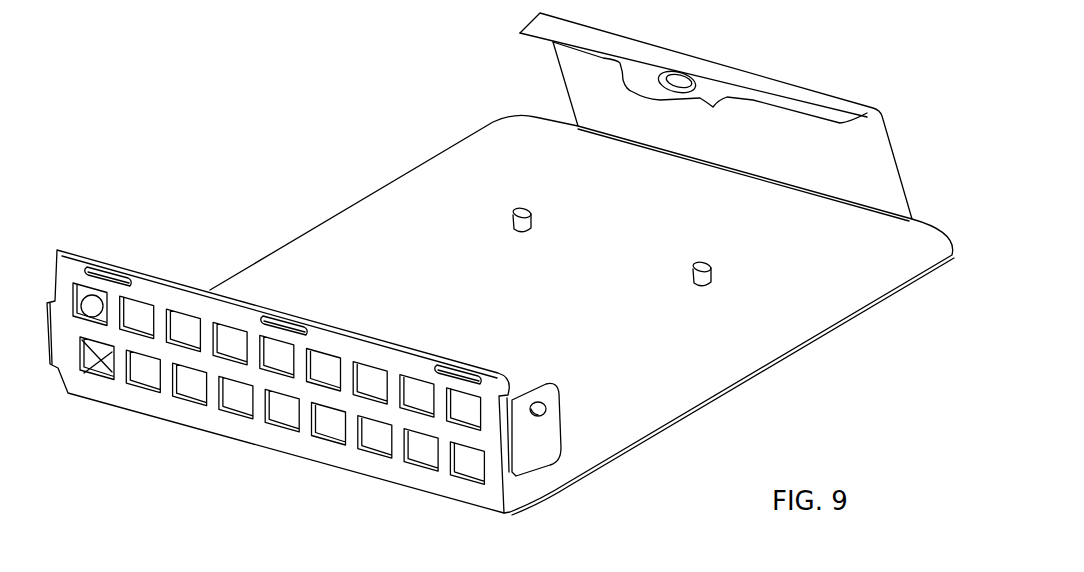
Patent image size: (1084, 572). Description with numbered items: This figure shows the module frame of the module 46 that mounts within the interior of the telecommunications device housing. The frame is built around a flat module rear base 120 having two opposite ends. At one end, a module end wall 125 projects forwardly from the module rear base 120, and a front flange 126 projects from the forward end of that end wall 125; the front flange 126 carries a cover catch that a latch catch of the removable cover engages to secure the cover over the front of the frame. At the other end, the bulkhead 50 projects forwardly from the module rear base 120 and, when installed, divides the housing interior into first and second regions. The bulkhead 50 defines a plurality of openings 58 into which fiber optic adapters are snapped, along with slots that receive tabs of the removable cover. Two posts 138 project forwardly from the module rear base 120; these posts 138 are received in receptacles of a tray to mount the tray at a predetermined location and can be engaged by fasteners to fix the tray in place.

The module 46 is at (318, 134).
The bulkhead 50 is at (82, 254).
The openings 58 is at (135, 312).
The module rear base 120 is at (730, 387).
The module end wall 125 is at (862, 170).
The front flange 126 is at (705, 83).
The posts 138 is at (518, 207).